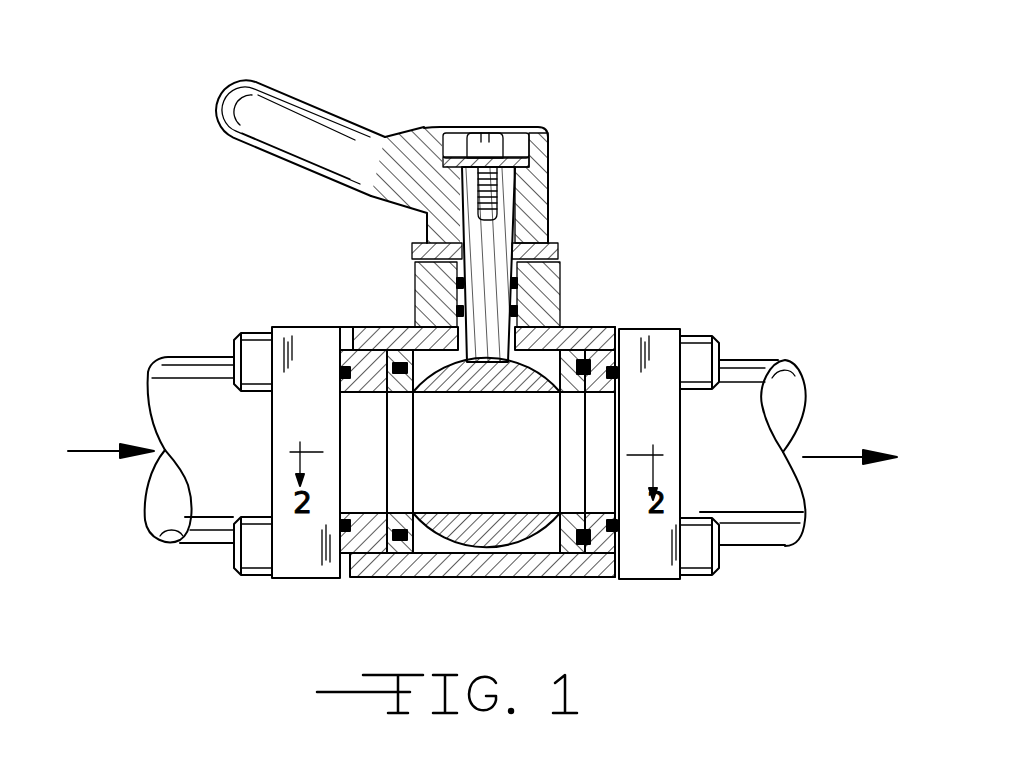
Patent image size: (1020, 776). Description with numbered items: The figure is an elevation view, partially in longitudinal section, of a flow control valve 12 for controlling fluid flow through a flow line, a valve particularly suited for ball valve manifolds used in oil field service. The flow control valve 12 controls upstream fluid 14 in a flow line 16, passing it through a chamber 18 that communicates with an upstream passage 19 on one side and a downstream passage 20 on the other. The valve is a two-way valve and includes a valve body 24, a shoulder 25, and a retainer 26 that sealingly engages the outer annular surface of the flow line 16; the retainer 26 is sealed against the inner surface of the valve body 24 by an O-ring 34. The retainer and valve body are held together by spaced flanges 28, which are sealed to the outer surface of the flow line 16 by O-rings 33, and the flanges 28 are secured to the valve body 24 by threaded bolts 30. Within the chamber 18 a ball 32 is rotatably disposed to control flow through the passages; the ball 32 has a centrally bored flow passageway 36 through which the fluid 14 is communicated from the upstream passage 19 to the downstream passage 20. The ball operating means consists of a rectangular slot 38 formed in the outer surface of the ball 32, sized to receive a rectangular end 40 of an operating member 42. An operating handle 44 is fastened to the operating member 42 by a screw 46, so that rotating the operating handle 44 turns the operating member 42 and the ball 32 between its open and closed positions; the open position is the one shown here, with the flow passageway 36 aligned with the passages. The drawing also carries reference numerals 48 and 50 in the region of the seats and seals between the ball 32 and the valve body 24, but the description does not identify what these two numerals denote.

The flow control valve 12 is at (700, 240).
The upstream fluid 14 is at (80, 451).
The flow line 16 is at (787, 362).
The chamber 18 is at (573, 470).
The upstream passage 19 is at (403, 457).
The downstream passage 20 is at (830, 457).
The valve body 24 is at (583, 332).
The shoulder 25 is at (605, 335).
The retainer 26 is at (352, 330).
The flanges 28 is at (660, 345).
The threaded bolts 30 is at (232, 342).
The ball 32 is at (480, 575).
The O-rings 33 is at (343, 357).
The O-ring 34 is at (375, 327).
The flow passageway 36 is at (520, 393).
The rectangular slot 38 is at (457, 393).
The rectangular end 40 is at (490, 400).
The operating member 42 is at (520, 208).
The operating handle 44 is at (297, 127).
The screw 46 is at (487, 137).
The upstream seal 48 is at (393, 393).
The downstream seal 50 is at (572, 398).